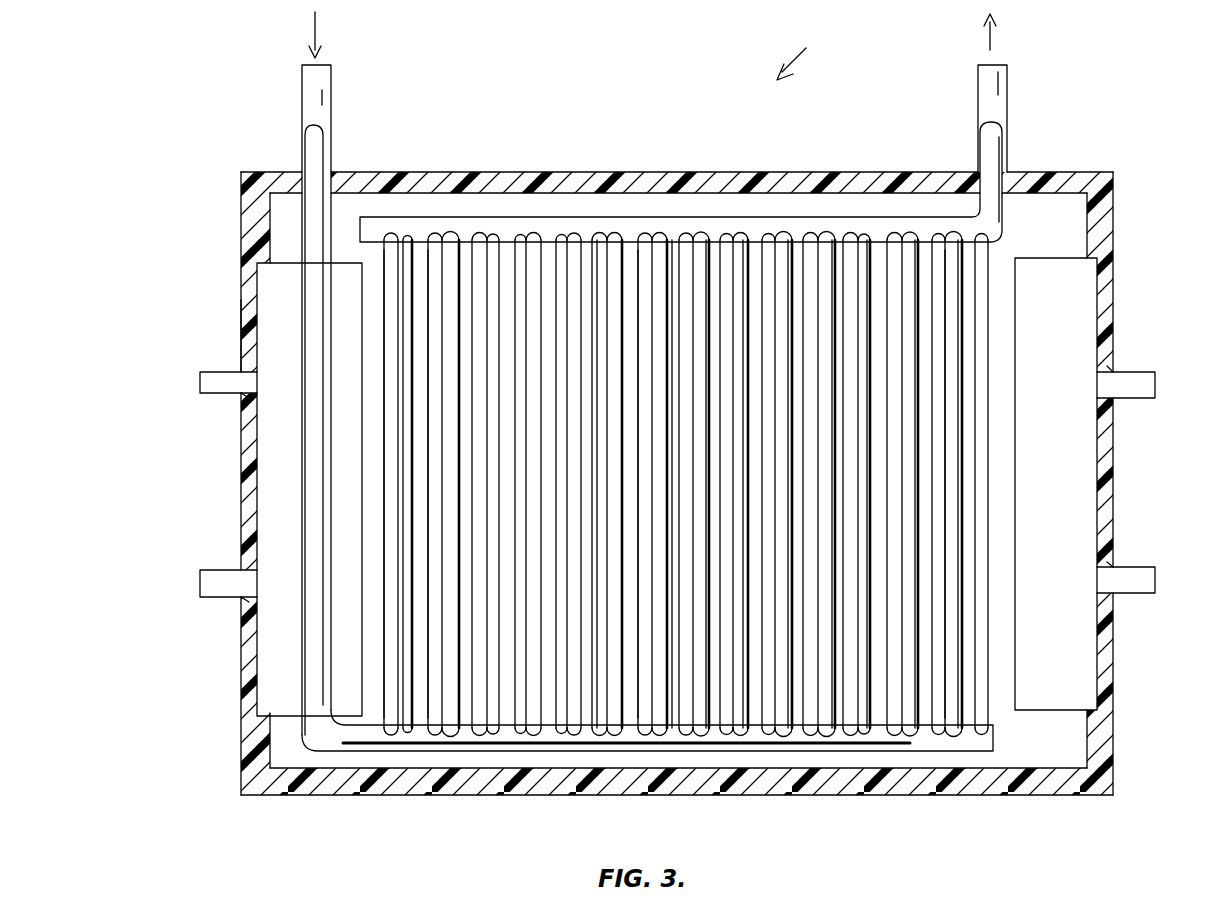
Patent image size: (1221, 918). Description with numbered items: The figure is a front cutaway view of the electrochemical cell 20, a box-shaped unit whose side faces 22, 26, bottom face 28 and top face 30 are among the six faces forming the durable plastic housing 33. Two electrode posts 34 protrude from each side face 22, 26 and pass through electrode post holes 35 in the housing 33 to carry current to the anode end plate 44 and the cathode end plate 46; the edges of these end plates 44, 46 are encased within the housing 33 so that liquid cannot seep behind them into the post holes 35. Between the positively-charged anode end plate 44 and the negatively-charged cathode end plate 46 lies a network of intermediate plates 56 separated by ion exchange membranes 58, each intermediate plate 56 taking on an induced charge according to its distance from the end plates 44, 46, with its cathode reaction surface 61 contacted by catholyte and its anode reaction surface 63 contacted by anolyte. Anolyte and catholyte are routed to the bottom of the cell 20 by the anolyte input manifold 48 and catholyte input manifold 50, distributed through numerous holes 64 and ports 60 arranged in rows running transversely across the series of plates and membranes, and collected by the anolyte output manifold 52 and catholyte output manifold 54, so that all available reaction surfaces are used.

The electrochemical cell 20 is at (810, 53).
The side face 22 is at (1115, 478).
The side face 26 is at (243, 502).
The bottom face 28 is at (627, 790).
The top face 30 is at (1086, 172).
The housing 33 is at (245, 352).
The electrode post 34 is at (205, 386).
The electrode post hole 35 is at (245, 400).
The anode end plate 44 is at (268, 296).
The cathode end plate 46 is at (1075, 298).
The anolyte input manifold 48 is at (323, 160).
The catholyte input manifold 50 is at (324, 100).
The anolyte output manifold 52 is at (1000, 146).
The catholyte output manifold 54 is at (996, 88).
The intermediate plate 56 is at (432, 531).
The ion exchange membrane 58 is at (460, 576).
The port 60 is at (406, 236).
The cathode reaction surface 61 is at (672, 244).
The anode reaction surface 63 is at (646, 250).
The hole 64 is at (402, 742).